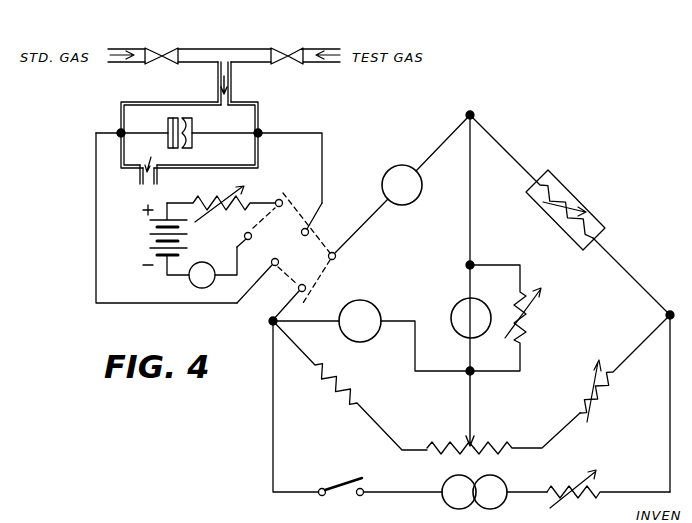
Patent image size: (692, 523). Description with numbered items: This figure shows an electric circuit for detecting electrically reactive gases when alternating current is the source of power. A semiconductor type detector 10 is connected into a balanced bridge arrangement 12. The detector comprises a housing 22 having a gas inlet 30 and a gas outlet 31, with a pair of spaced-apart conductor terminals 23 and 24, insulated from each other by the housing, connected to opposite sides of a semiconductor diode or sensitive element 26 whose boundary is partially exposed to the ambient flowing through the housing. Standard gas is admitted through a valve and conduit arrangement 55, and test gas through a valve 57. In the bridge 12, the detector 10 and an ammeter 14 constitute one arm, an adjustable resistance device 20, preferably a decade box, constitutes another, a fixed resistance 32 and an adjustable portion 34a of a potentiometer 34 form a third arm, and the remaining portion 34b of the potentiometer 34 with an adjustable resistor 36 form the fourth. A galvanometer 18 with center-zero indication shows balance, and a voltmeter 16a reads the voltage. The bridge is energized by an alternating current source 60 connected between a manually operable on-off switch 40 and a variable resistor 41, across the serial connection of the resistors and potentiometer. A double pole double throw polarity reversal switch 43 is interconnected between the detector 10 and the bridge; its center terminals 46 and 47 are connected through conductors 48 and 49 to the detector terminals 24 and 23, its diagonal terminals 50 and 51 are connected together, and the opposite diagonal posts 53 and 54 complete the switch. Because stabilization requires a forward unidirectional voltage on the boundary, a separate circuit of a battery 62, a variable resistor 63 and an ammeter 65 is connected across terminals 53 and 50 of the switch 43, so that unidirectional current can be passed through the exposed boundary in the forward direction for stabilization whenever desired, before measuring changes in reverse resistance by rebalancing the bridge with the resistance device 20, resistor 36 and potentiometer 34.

The semiconductor type detector 10 is at (157, 96).
The balanced bridge arrangement 12 is at (651, 242).
The ammeter 14 is at (410, 166).
The voltmeter 16a is at (358, 342).
The galvanometer 18 is at (451, 310).
The adjustable resistance device 20 is at (586, 208).
The housing 22 is at (259, 112).
The conductor terminal 23 is at (244, 131).
The conductor terminal 24 is at (163, 131).
The semiconductor diode or sensitive element 26 is at (189, 146).
The gas inlet 30 is at (215, 86).
The gas outlet 31 is at (138, 178).
The fixed resistance 32 is at (326, 390).
The potentiometer 34 is at (487, 428).
The adjustable portion of potentiometer resistance 34a is at (437, 440).
The remaining portion of potentiometer resistance 34b is at (509, 444).
The adjustable resistor 36 is at (600, 392).
The manually operable on-off switch 40 is at (344, 478).
The adjustable resistance device 41 is at (563, 482).
The double pole double throw polarity reversal switch 43 is at (325, 280).
The center terminal of switch 46 is at (280, 276).
The center terminal of switch 47 is at (307, 222).
The conductor 48 is at (95, 189).
The conductor 49 is at (300, 132).
The diagonal terminal of switch 50 is at (281, 198).
The diagonal terminal of switch 51 is at (307, 286).
The diagonal post of switch 53 is at (242, 235).
The diagonal post of switch 54 is at (340, 257).
The valve and conduit arrangement 55 is at (162, 46).
The valve 57 is at (288, 46).
The alternating current source 60 is at (443, 506).
The battery 62 is at (152, 240).
The variable resistor 63 is at (212, 196).
The ammeter 65 is at (192, 285).